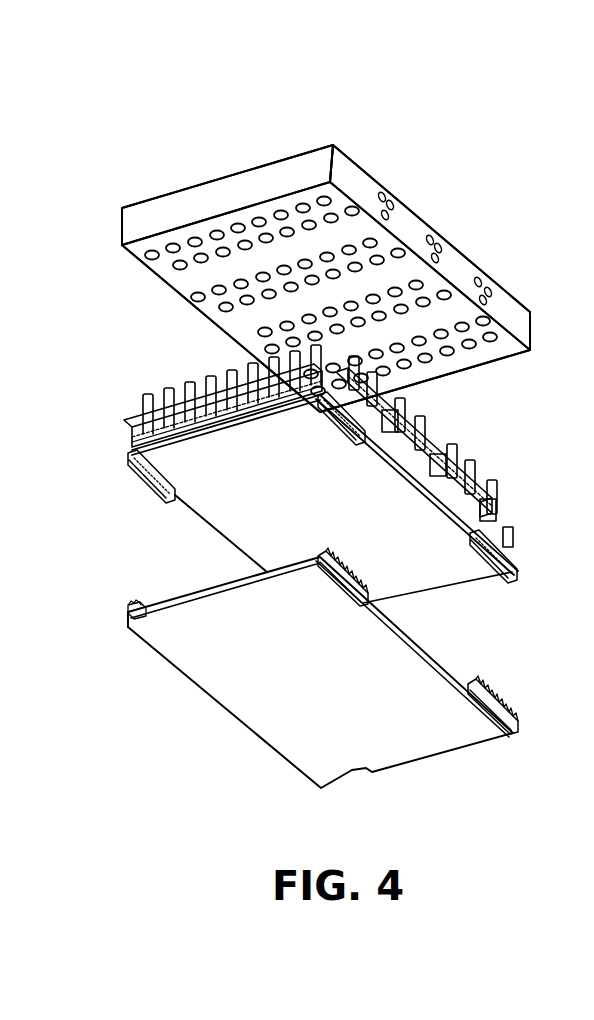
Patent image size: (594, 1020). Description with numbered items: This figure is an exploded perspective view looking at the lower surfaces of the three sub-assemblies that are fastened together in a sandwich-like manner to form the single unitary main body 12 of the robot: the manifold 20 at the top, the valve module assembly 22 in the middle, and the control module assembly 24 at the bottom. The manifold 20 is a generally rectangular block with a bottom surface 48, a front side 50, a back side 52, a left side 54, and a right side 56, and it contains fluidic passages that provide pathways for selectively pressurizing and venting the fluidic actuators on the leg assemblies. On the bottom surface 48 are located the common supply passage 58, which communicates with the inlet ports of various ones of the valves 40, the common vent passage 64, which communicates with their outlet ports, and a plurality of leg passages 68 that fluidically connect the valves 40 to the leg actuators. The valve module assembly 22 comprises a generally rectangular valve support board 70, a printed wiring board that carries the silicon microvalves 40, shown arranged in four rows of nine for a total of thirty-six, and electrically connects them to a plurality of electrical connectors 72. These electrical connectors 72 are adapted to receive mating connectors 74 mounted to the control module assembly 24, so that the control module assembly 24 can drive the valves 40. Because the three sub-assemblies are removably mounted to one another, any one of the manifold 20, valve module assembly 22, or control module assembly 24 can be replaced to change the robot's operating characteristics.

The main body 12 is at (128, 140).
The manifold 20 is at (150, 262).
The valve module assembly 22 is at (131, 451).
The control module assembly 24 is at (160, 653).
The valves 40 is at (133, 428).
The bottom surface 48 is at (424, 371).
The front side 50 is at (256, 174).
The back side 52 is at (480, 367).
The left side 54 is at (508, 311).
The right side 56 is at (197, 311).
The common supply passage 58 is at (332, 203).
The common vent passage 64 is at (392, 240).
The leg passages 68 is at (297, 205).
The valve support board 70 is at (440, 589).
The electrical connectors 72 is at (518, 566).
The mating connectors 74 is at (518, 722).